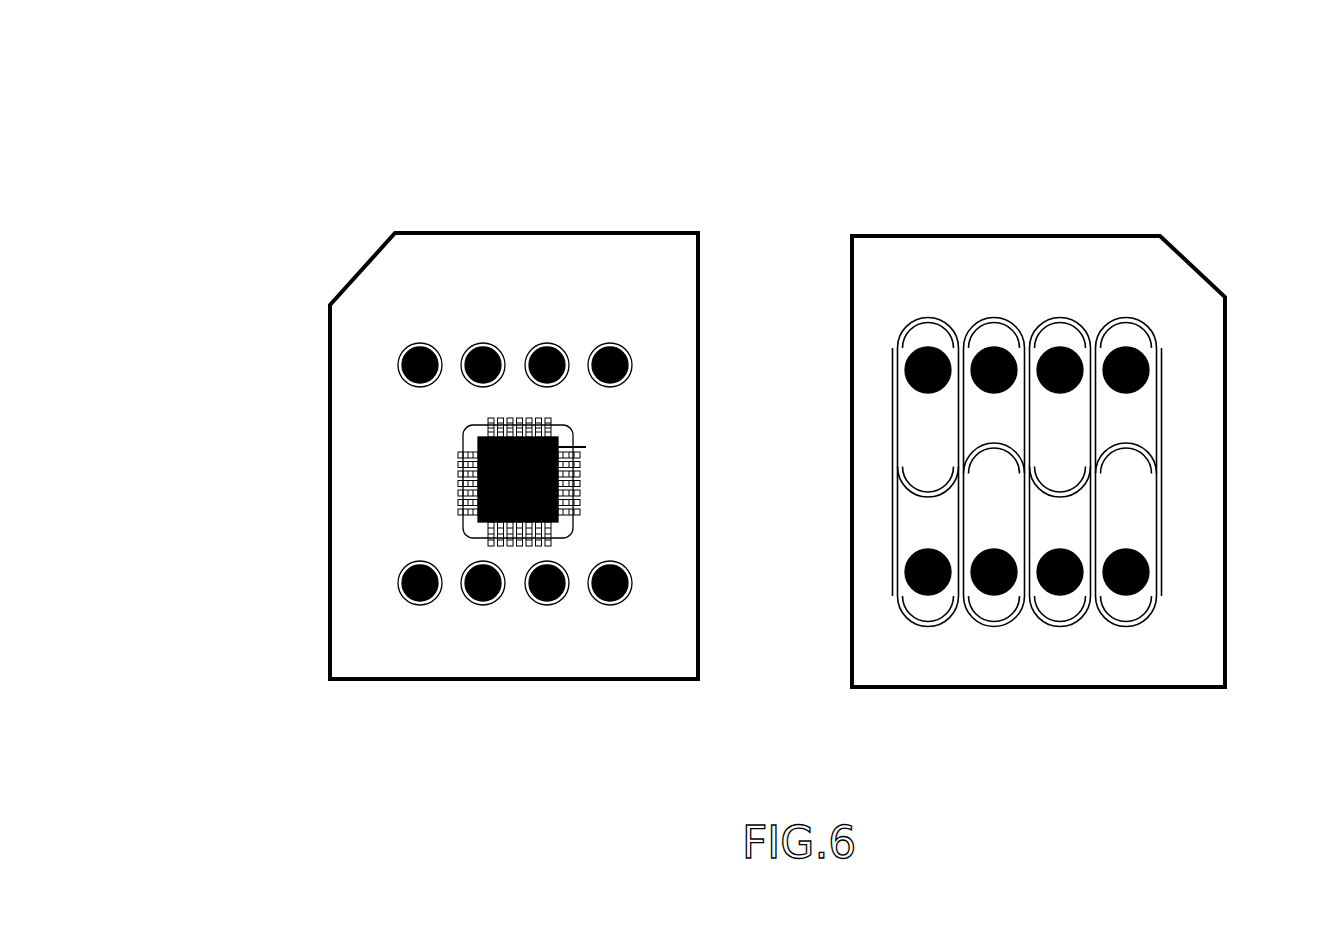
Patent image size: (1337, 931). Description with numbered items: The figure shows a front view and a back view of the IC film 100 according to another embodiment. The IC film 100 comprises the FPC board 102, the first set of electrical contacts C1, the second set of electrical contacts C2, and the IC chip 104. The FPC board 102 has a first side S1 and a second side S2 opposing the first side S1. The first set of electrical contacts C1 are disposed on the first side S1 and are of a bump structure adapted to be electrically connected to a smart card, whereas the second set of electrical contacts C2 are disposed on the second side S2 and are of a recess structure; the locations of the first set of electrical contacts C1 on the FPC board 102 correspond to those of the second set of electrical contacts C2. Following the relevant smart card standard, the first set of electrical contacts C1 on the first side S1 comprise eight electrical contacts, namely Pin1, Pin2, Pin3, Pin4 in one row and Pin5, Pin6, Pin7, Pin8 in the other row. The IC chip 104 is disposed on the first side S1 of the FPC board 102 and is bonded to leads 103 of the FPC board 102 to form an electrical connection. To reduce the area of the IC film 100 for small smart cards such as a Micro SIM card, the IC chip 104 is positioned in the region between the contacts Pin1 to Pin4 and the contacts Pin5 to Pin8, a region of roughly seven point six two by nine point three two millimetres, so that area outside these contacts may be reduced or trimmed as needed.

The IC film 100 is at (274, 101).
The FPC board 102 is at (328, 382).
The first side S1 is at (328, 555).
The second side S2 is at (1173, 292).
The first set of electrical contacts C1 is at (670, 653).
The second set of electrical contacts C2 is at (1106, 640).
The leads 103 is at (458, 470).
The IC chip 104 is at (480, 499).
The electrical contact Pin 1 Pin1 is at (419, 343).
The electrical contact Pin 2 Pin2 is at (482, 343).
The electrical contact Pin 3 Pin3 is at (546, 343).
The electrical contact Pin 4 Pin4 is at (609, 343).
The electrical contact Pin 5 Pin5 is at (418, 605).
The electrical contact Pin 6 Pin6 is at (481, 605).
The electrical contact Pin 7 Pin7 is at (545, 605).
The electrical contact Pin 8 Pin8 is at (608, 605).